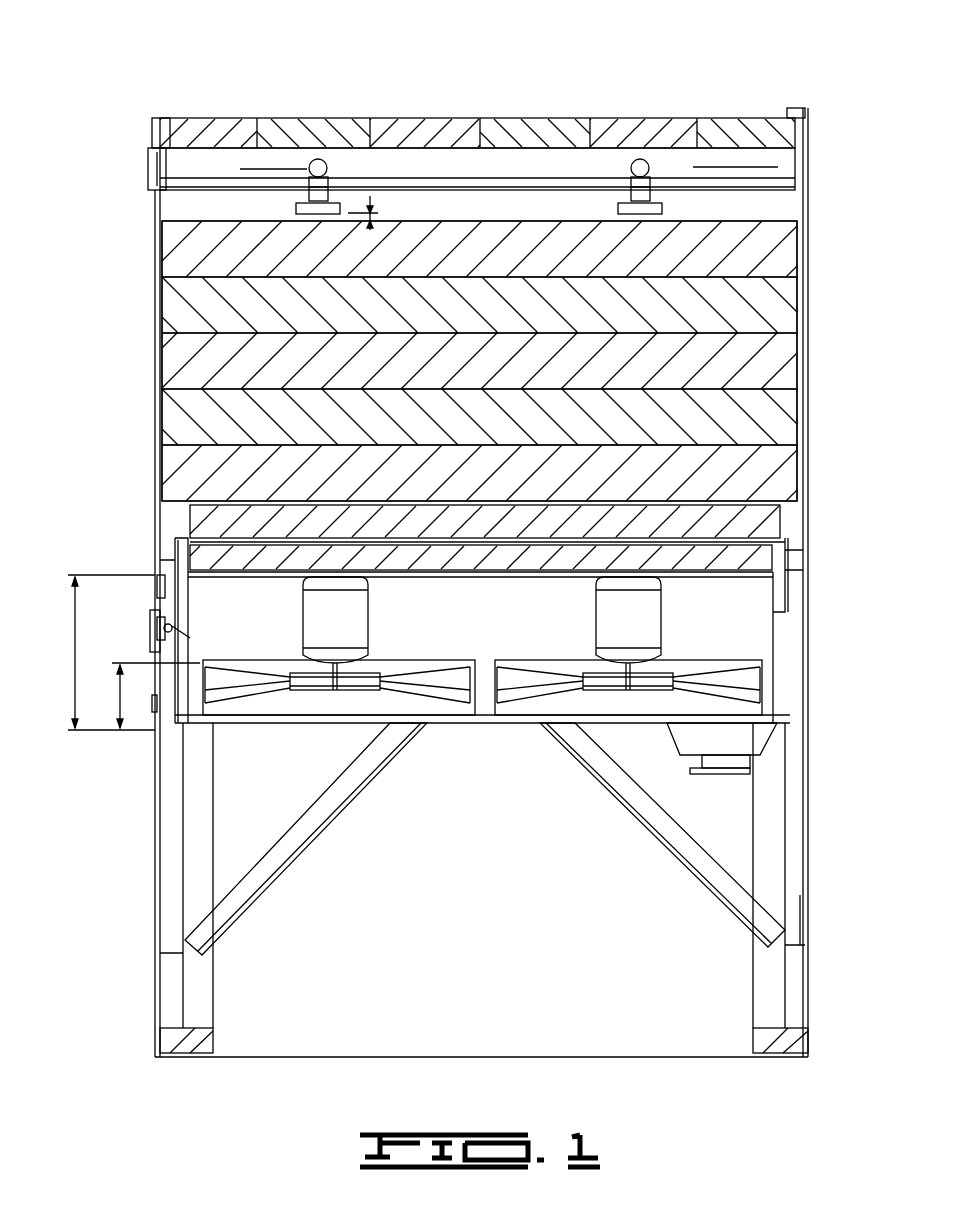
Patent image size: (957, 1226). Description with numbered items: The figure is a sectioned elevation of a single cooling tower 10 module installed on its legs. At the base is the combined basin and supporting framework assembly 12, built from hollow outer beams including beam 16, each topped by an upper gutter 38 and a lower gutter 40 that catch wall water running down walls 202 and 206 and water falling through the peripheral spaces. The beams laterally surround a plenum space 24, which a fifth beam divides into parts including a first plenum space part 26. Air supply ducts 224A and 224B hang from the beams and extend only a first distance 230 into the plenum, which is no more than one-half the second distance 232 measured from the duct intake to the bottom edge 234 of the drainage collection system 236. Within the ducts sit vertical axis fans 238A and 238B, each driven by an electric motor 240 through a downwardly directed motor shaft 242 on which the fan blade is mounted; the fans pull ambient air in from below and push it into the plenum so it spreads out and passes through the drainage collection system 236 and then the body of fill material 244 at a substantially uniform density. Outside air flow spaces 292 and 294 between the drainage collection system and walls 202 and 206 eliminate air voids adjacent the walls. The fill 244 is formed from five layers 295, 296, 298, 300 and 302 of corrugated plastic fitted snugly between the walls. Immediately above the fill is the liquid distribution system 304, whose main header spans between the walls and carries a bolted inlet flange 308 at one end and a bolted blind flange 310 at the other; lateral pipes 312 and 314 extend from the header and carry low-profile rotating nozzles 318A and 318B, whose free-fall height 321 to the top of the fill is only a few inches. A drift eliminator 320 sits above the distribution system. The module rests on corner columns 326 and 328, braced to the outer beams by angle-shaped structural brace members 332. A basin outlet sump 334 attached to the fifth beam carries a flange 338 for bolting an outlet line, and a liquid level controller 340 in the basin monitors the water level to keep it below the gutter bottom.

The cooling tower 10 is at (798, 68).
The drift eliminator 320 is at (210, 118).
The bolted inlet flange 308 is at (800, 190).
The liquid distribution system 304 is at (775, 160).
The bolted blind flange 310 is at (158, 178).
The lateral pipe 312 is at (316, 159).
The lateral pipe 314 is at (645, 159).
The rotating nozzle 318A is at (338, 203).
The rotating nozzle 318B is at (664, 203).
The free-fall height 321 is at (378, 213).
The wall 202 is at (156, 333).
The wall 206 is at (806, 333).
The body of fill material 244 is at (168, 255).
The fill layer 295 is at (780, 248).
The fill layer 296 is at (790, 298).
The fill layer 298 is at (780, 365).
The fill layer 300 is at (780, 415).
The fill layer 302 is at (780, 470).
The drainage collection system 236 is at (178, 524).
The outside air flow space 294 is at (785, 522).
The outside air flow space 292 is at (184, 540).
The upper gutter 38 is at (805, 552).
The lower gutter 40 is at (786, 612).
The combined basin and supporting framework assembly 12 is at (810, 628).
The bottom edge 234 is at (272, 578).
The hollow outer beam 16 is at (190, 646).
The motor shaft 242 is at (320, 715).
The electric motor 240 is at (358, 616).
The air supply duct 224A is at (248, 712).
The air supply duct 224B is at (750, 706).
The plenum space 24 is at (392, 654).
The first plenum space part 26 is at (628, 681).
The vertical axis fan 238A is at (425, 680).
The vertical axis fan 238B is at (522, 690).
The liquid level controller 340 is at (165, 641).
The second distance 232 is at (75, 630).
The first distance 230 is at (120, 695).
The corner column 326 is at (180, 860).
The corner column 328 is at (795, 842).
The angle-shaped structural brace member 332 is at (318, 822).
The basin outlet sump 334 is at (752, 736).
The flange 338 is at (740, 770).